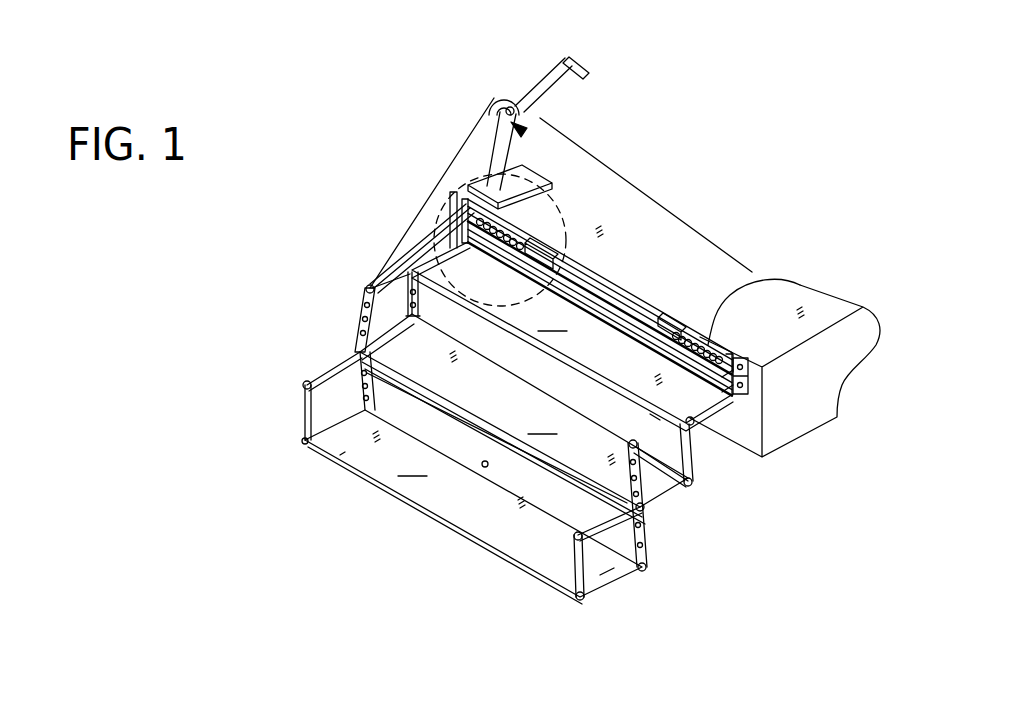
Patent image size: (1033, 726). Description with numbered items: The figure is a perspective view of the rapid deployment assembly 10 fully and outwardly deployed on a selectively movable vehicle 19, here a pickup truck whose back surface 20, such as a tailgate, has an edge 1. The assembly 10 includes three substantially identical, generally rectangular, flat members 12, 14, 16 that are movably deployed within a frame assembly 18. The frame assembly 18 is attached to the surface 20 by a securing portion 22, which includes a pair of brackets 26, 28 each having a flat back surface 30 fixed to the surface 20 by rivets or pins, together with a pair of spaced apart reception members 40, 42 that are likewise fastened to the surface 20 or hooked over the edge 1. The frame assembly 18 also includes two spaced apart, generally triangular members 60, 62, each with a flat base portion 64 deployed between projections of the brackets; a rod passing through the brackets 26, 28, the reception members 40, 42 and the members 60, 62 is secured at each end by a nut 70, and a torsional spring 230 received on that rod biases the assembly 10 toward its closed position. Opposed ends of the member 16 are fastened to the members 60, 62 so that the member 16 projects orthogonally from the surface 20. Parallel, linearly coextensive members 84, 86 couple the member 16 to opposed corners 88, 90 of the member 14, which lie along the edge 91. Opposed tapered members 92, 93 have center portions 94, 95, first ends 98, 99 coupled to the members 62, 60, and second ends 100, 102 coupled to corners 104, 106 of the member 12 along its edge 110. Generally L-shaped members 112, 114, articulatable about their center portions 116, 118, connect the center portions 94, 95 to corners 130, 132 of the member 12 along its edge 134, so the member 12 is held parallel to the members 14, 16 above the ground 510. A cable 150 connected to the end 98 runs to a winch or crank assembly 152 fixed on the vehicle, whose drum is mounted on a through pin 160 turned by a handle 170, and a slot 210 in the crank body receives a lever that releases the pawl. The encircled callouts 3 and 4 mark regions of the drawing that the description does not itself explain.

The edge 1 is at (714, 290).
The detail region of FIG. 3 is at (552, 198).
The detail region of FIG. 4 is at (372, 564).
The rapid deployment assembly 10 is at (745, 272).
The member 12 is at (473, 503).
The member 14 is at (524, 419).
The member 16 is at (572, 336).
The frame assembly 18 is at (672, 474).
The selectively movable vehicle 19 is at (800, 410).
The back surface 20 is at (747, 437).
The securing portion 22 is at (614, 264).
The bracket 26 is at (464, 206).
The bracket 28 is at (730, 360).
The flat back surface 30 is at (492, 198).
The reception member 40 is at (556, 247).
The reception member 42 is at (670, 318).
The member 60 is at (700, 412).
The member 62 is at (425, 242).
The flat base portion 64 is at (724, 390).
The nut 70 is at (450, 200).
The member 84 is at (420, 300).
The member 86 is at (694, 505).
The corner 88 is at (420, 320).
The corner 90 is at (650, 414).
The edge 91 is at (522, 377).
The member 92 is at (354, 313).
The member 93 is at (642, 570).
The center portion 94 is at (355, 353).
The center portion 95 is at (613, 530).
The first end 98 is at (366, 286).
The first end 99 is at (648, 448).
The second end 100 is at (340, 455).
The second end 102 is at (638, 583).
The corner 104 is at (408, 384).
The corner 106 is at (615, 568).
The edge 110 is at (482, 465).
The L-shaped member 112 is at (289, 412).
The L-shaped member 114 is at (556, 563).
The center portion 116 is at (303, 385).
The center portion 118 is at (574, 535).
The corner 130 is at (303, 447).
The corner 132 is at (572, 598).
The edge 134 is at (437, 527).
The cord or flexible connecting member 150 is at (462, 148).
The winch or crank assembly 152 is at (476, 79).
The pin or member 160 is at (548, 105).
The handle 170 is at (580, 65).
The slot 210 is at (530, 112).
The torsional spring 230 is at (792, 280).
The ground 510 is at (240, 563).